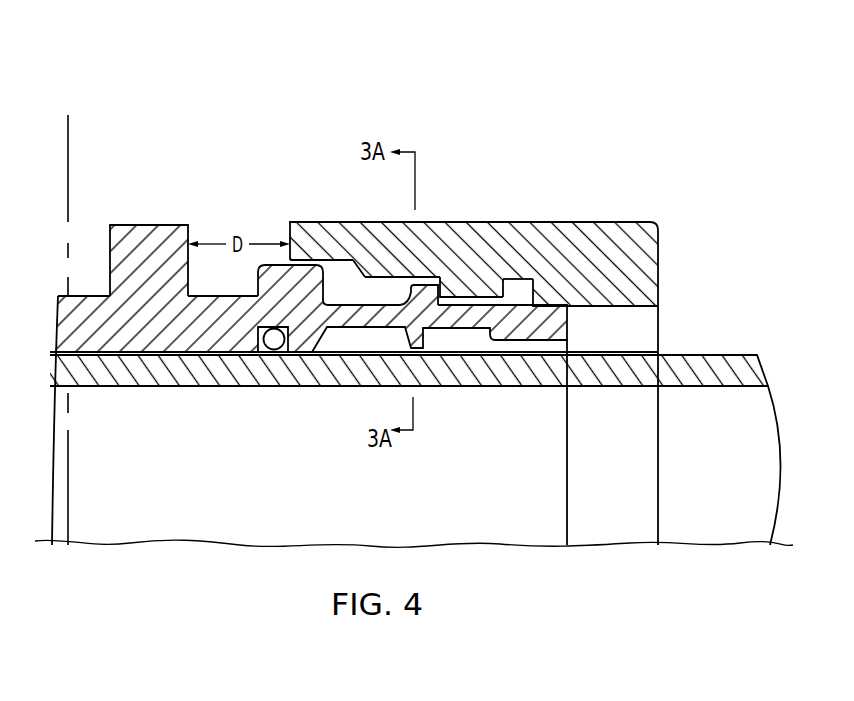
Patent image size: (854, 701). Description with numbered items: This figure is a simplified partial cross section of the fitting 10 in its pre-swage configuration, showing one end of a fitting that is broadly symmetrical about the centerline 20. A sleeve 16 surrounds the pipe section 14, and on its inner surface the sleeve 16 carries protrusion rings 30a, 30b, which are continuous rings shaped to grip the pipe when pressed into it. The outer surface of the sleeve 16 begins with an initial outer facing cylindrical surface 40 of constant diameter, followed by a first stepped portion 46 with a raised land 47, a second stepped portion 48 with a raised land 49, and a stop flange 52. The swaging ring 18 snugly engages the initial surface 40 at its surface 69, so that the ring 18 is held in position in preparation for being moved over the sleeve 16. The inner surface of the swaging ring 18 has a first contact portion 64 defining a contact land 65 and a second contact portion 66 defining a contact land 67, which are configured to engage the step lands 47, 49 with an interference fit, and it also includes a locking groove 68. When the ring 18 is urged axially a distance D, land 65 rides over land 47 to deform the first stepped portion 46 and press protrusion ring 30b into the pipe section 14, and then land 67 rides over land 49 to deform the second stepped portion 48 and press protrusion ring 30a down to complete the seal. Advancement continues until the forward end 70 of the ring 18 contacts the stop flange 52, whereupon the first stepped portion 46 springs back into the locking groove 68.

The fitting 10 is at (462, 90).
The pipe section 14 is at (738, 355).
The sleeve 16 is at (90, 296).
The swaging ring 18 is at (628, 222).
The centerline 20 is at (69, 184).
The protrusion ring 30a is at (297, 346).
The protrusion ring 30b is at (413, 348).
The initial outer facing cylindrical surface 40 is at (568, 320).
The first stepped portion 46 is at (386, 313).
The land 47 is at (429, 283).
The second stepped portion 48 is at (262, 338).
The land 49 is at (309, 259).
The stop flange 52 is at (189, 233).
The first contact portion 64 is at (457, 293).
The contact land 65 is at (502, 292).
The second contact portion 66 is at (354, 267).
The contact land 67 is at (387, 275).
The locking groove 68 is at (519, 287).
The surface 69 is at (548, 318).
The forward end 70 is at (290, 224).